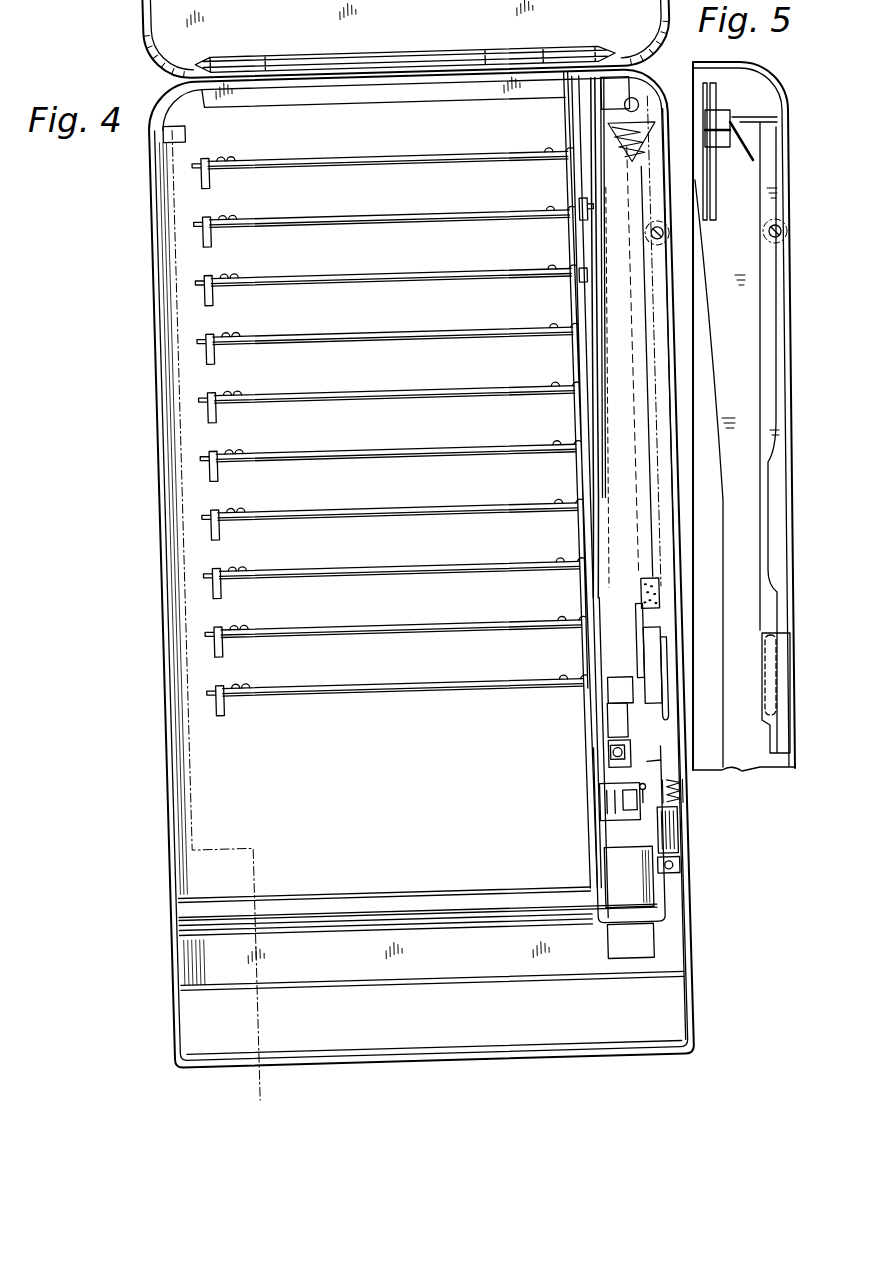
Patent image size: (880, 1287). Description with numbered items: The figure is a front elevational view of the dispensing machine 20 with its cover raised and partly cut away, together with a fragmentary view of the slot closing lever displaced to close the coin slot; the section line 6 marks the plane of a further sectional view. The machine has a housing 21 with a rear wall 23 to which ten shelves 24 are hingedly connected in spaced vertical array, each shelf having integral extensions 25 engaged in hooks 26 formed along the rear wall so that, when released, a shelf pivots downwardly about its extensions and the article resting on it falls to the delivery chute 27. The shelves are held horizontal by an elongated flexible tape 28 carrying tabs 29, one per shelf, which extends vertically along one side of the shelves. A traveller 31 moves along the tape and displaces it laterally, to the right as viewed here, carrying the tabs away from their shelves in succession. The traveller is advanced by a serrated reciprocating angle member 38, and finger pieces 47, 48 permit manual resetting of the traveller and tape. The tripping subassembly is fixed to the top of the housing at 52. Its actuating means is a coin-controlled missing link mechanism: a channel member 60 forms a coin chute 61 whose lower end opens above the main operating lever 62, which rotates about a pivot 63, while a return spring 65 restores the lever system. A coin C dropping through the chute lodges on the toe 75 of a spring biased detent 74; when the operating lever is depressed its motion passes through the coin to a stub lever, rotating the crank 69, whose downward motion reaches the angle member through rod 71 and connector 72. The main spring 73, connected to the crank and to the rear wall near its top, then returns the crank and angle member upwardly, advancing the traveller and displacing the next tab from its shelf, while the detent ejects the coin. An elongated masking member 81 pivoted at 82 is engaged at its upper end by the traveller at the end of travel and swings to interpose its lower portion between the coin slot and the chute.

In FIG. 4, the section line 6- 6 is at (258, 1088).
In FIG. 4, the dispensing machine 20 is at (392, 569).
In FIG. 4, the housing 21 is at (151, 714).
In FIG. 4, the rear wall 23 is at (197, 787).
In FIG. 5, the rear wall 23 is at (738, 478).
In FIG. 4, the shelves 24 is at (396, 281).
In FIG. 4, the integral extensions 25 is at (195, 239).
In FIG. 4, the hooks 26 is at (205, 219).
In FIG. 4, the delivery chute 27 is at (477, 1030).
In FIG. 4, the flexible tape 28 is at (562, 192).
In FIG. 4, the tabs 29 is at (564, 349).
In FIG. 4, the traveller 31 is at (600, 736).
In FIG. 5, the traveller 31 is at (722, 117).
In FIG. 4, the angle member 38 is at (591, 115).
In FIG. 5, the angle member 38 is at (705, 100).
In FIG. 4, the finger piece 47 is at (601, 700).
In FIG. 4, the finger piece 48 is at (591, 763).
In FIG. 4, the fixing point of support member 52 is at (640, 86).
In FIG. 4, the channel member 60 is at (705, 638).
In FIG. 5, the channel member 60 is at (770, 653).
In FIG. 4, the coin chute 61 is at (639, 699).
In FIG. 5, the coin chute 61 is at (760, 667).
In FIG. 4, the main operating lever 62 is at (656, 763).
In FIG. 4, the pivot 63 is at (629, 775).
In FIG. 5, the pivot 63 is at (770, 747).
In FIG. 4, the return spring 65 is at (661, 805).
In FIG. 4, the crank 69 is at (627, 599).
In FIG. 4, the rod 71 is at (620, 673).
In FIG. 4, the connector 72 is at (611, 833).
In FIG. 4, the main spring 73 is at (637, 121).
In FIG. 4, the spring biased detent 74 is at (621, 834).
In FIG. 4, the toe 75 is at (647, 841).
In FIG. 4, the coin C is at (641, 834).
In FIG. 4, the masking member 81 is at (651, 347).
In FIG. 5, the masking member 81 is at (773, 320).
In FIG. 4, the pivot 82 is at (654, 247).
In FIG. 5, the pivot 82 is at (769, 232).